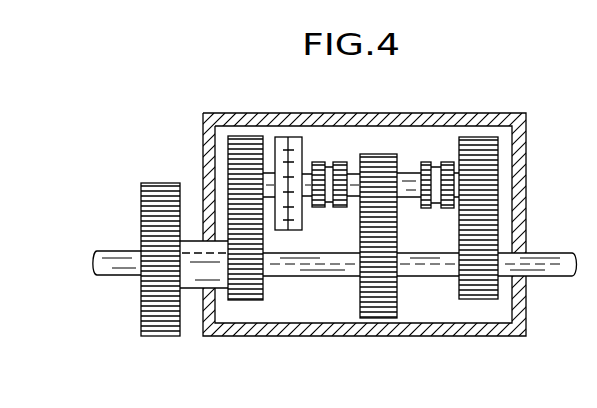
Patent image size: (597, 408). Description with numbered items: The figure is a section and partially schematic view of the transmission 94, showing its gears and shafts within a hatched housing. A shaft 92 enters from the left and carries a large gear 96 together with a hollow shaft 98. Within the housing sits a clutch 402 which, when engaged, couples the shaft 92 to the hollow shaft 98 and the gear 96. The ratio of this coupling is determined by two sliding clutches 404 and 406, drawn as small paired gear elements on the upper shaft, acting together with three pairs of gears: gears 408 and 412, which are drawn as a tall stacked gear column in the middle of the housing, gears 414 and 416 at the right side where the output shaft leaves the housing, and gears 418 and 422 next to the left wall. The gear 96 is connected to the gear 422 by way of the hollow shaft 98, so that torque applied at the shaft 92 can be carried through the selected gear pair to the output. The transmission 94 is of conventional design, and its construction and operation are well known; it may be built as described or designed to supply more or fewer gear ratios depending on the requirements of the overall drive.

The shaft 92 is at (100, 251).
The transmission 94 is at (443, 102).
The gear 96 is at (140, 308).
The hollow shaft 98 is at (188, 241).
The clutch 402 is at (303, 143).
The sliding clutch 404 is at (341, 162).
The sliding clutch 406 is at (427, 208).
The gear 408 is at (378, 153).
The gear 412 is at (398, 306).
The gear 414 is at (500, 151).
The gear 416 is at (500, 236).
The gear 418 is at (240, 136).
The gear 422 is at (243, 300).